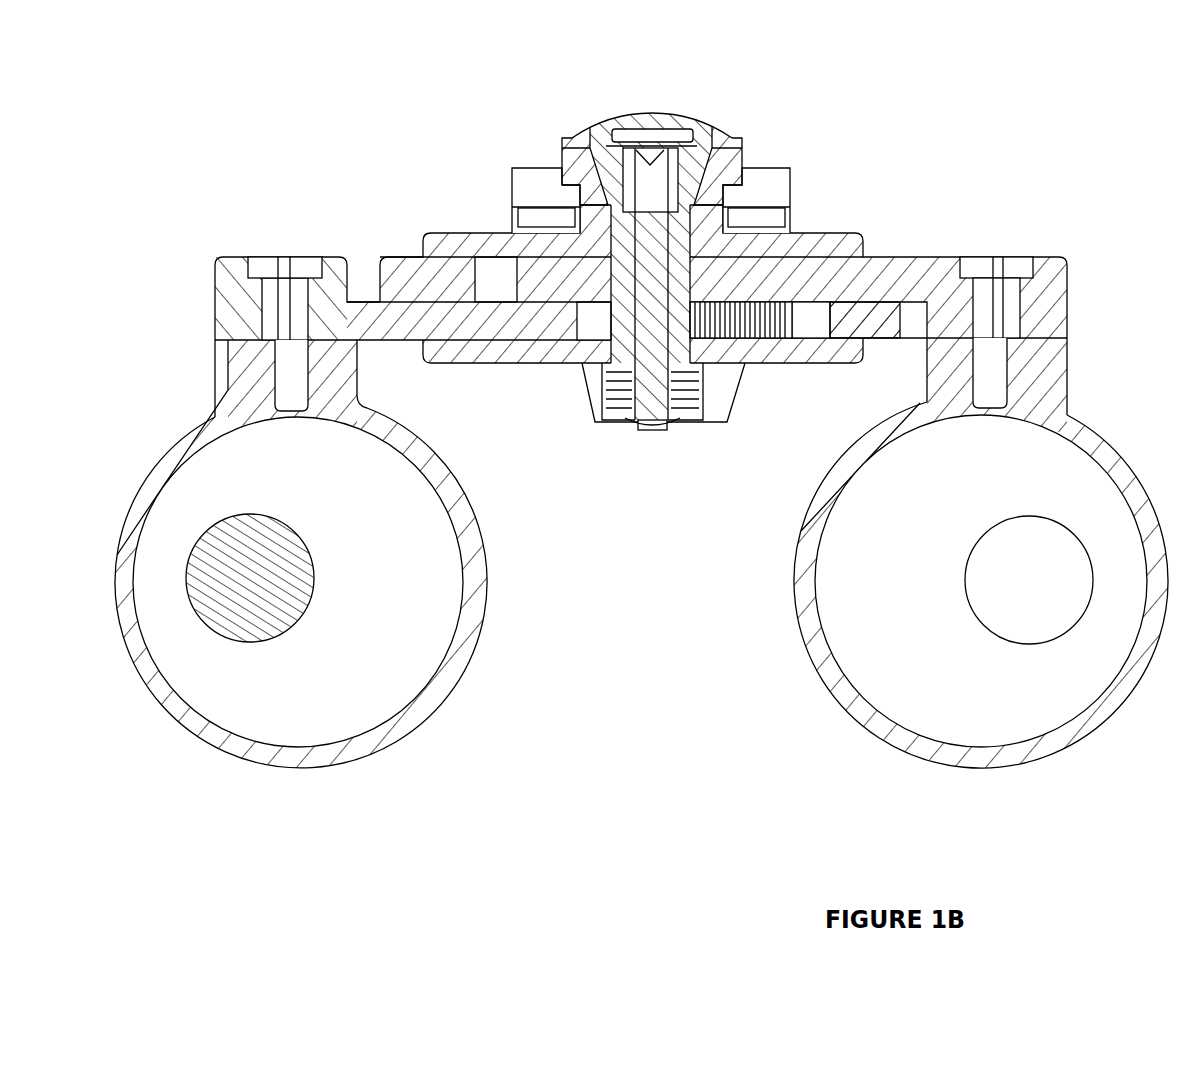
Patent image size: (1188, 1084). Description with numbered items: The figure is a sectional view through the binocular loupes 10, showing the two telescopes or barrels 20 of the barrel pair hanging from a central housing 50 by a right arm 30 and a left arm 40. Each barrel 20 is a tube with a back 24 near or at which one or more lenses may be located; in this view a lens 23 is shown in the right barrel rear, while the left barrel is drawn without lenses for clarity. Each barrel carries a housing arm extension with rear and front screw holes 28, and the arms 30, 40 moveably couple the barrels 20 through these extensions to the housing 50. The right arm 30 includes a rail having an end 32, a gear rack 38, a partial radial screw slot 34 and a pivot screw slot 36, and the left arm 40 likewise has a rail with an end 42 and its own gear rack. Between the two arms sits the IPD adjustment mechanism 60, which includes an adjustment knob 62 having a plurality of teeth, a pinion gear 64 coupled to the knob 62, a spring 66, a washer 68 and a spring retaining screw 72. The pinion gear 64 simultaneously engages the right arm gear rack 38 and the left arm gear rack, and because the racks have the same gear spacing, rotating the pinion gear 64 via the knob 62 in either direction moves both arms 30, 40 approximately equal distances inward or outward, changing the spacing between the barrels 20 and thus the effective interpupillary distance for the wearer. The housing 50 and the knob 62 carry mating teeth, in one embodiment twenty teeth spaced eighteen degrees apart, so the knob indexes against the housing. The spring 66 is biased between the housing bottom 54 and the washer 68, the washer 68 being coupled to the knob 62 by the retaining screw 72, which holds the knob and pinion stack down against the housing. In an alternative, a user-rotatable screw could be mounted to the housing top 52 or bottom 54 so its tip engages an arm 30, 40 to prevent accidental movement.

The binocular loupes 10 is at (411, 862).
The barrel 20 is at (115, 577).
The lens 23 is at (265, 550).
The back 24 is at (993, 626).
The screw hole 28 is at (283, 375).
The right arm 30 is at (364, 384).
The end 32 is at (235, 256).
The partial radial screw slot 34 is at (216, 300).
The pivot screw slot 36 is at (294, 256).
The gear rack 38 is at (775, 323).
The left arm 40 is at (878, 349).
The end 42 is at (1070, 276).
The housing 50 is at (472, 232).
The housing top 52 is at (832, 232).
The housing bottom 54 is at (480, 364).
The IPD adjustment mechanism 60 is at (548, 96).
The adjustment knob 62 is at (703, 113).
The pinion gear 64 is at (670, 252).
The spring 66 is at (602, 390).
The washer 68 is at (644, 412).
The spring retaining screw 72 is at (648, 431).